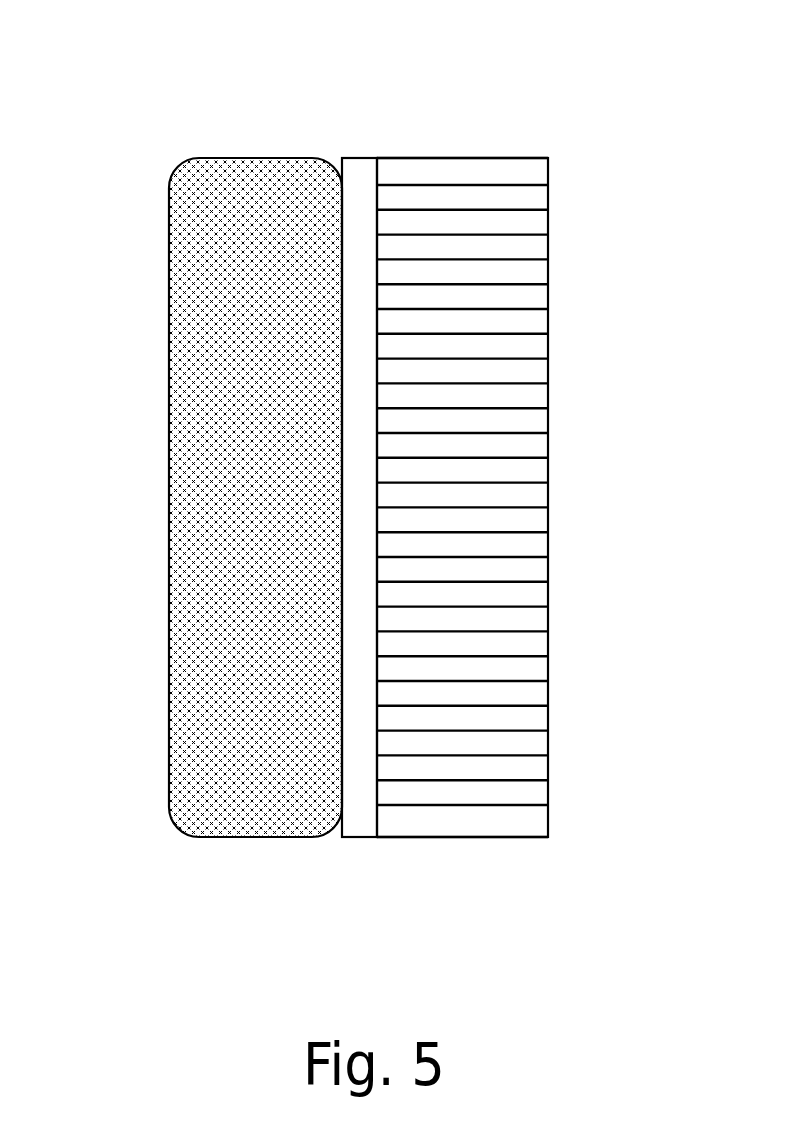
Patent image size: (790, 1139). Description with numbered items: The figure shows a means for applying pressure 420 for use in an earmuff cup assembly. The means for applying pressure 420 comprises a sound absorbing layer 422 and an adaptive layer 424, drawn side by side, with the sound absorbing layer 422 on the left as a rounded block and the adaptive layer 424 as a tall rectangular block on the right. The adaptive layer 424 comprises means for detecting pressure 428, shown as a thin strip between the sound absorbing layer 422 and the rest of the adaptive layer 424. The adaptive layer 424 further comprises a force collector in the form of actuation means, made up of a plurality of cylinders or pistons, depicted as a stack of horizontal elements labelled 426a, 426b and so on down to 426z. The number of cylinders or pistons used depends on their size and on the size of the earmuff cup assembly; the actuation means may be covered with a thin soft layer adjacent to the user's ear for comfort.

The means for applying pressure 420 is at (172, 81).
The sound absorbing layer 422 is at (180, 510).
The adaptive layer 424 is at (372, 140).
The actuation means 426a is at (527, 178).
The actuation means 426b is at (527, 200).
The actuation means 426z is at (527, 817).
The means for detecting pressure 428 is at (360, 822).